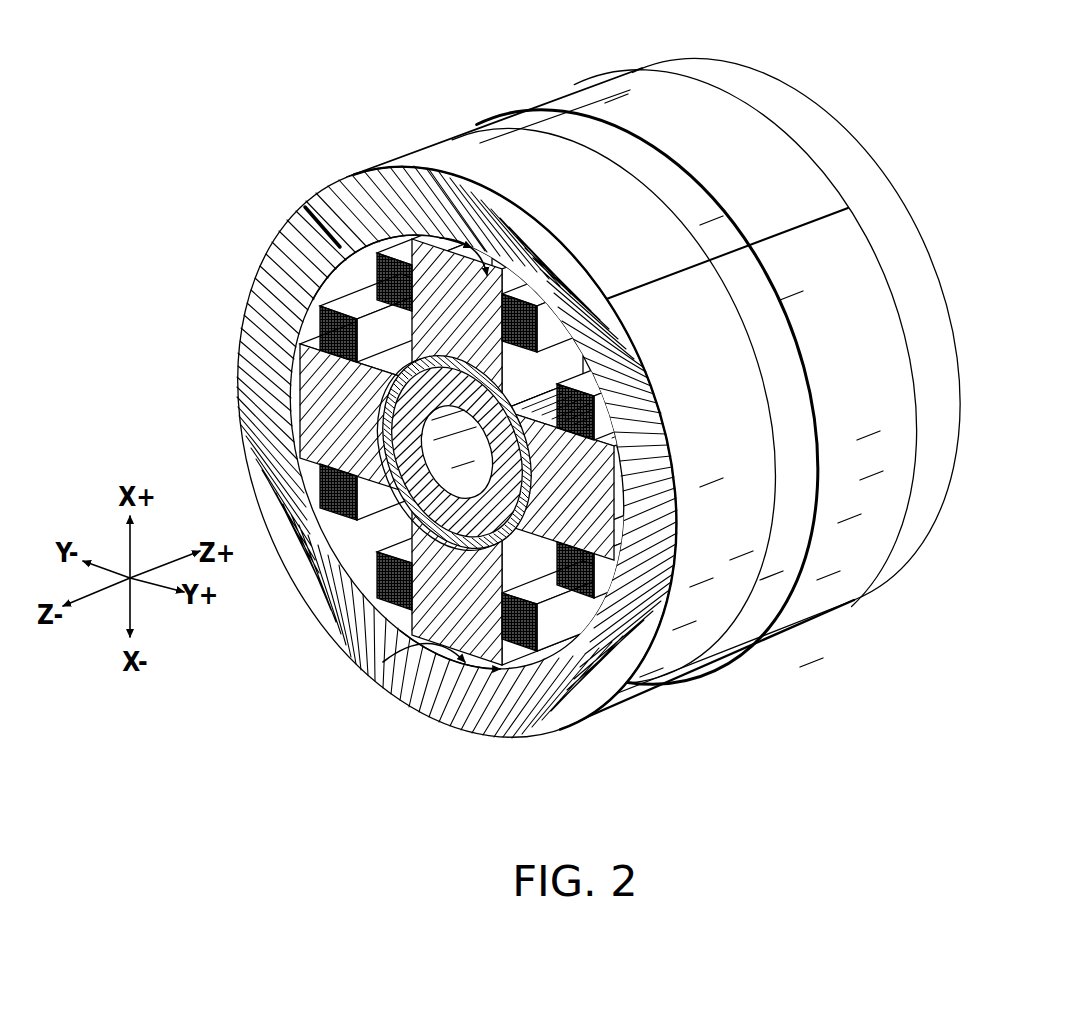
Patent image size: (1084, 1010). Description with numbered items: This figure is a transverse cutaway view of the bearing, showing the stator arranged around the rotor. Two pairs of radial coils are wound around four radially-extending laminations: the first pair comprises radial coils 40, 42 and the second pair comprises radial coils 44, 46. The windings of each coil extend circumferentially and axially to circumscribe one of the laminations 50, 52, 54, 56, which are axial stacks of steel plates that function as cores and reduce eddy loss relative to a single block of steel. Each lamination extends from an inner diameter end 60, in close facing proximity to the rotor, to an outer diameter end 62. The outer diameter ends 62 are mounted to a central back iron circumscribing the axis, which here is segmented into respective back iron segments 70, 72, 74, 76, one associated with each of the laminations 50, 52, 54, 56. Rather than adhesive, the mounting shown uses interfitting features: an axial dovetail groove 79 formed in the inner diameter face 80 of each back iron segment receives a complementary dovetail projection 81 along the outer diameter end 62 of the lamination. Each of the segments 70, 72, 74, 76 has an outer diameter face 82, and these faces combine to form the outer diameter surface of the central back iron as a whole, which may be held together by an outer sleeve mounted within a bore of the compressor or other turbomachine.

The radial coil 40 is at (372, 262).
The radial coil 42 is at (334, 612).
The radial coil 44 is at (577, 387).
The radial coil 46 is at (294, 405).
The lamination 50 is at (312, 238).
The lamination 52 is at (445, 650).
The lamination 54 is at (692, 595).
The lamination 56 is at (266, 468).
The inner diameter end 60 is at (528, 327).
The outer diameter end 62 is at (430, 235).
The back iron segment 70 is at (395, 190).
The back iron segment 72 is at (463, 700).
The back iron segment 74 is at (715, 527).
The back iron segment 76 is at (262, 472).
The axial dovetail groove 79 is at (452, 637).
The inner diameter face 80 is at (492, 285).
The dovetail projection 81 is at (455, 240).
The outer diameter face 82 is at (860, 548).